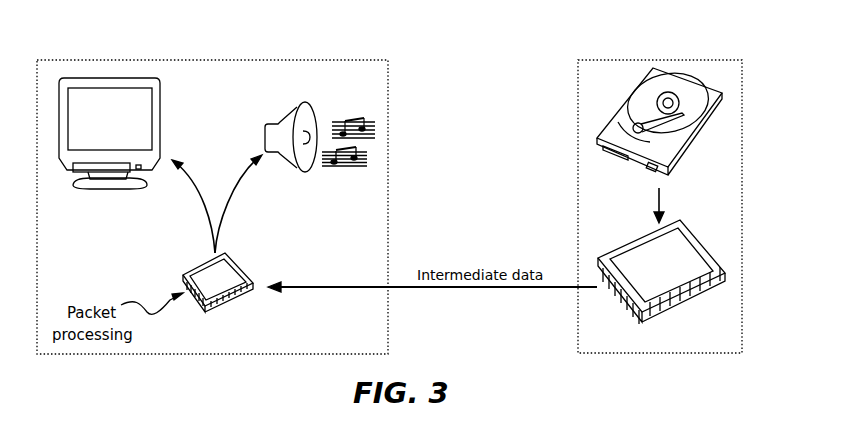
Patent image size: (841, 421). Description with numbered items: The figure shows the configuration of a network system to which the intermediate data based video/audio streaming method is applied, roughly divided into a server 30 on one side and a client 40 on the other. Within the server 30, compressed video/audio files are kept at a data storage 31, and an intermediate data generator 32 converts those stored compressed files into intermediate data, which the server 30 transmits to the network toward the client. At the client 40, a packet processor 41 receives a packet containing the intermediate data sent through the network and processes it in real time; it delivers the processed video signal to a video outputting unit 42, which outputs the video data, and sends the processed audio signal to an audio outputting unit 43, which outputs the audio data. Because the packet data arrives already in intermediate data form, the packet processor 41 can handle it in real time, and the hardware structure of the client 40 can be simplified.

The server 30 is at (705, 60).
The data storage 31 is at (685, 157).
The intermediate data generator 32 is at (688, 225).
The client 40 is at (341, 60).
The packet processor 41 is at (240, 275).
The video outputting unit 42 is at (163, 99).
The audio outputting unit 43 is at (312, 106).